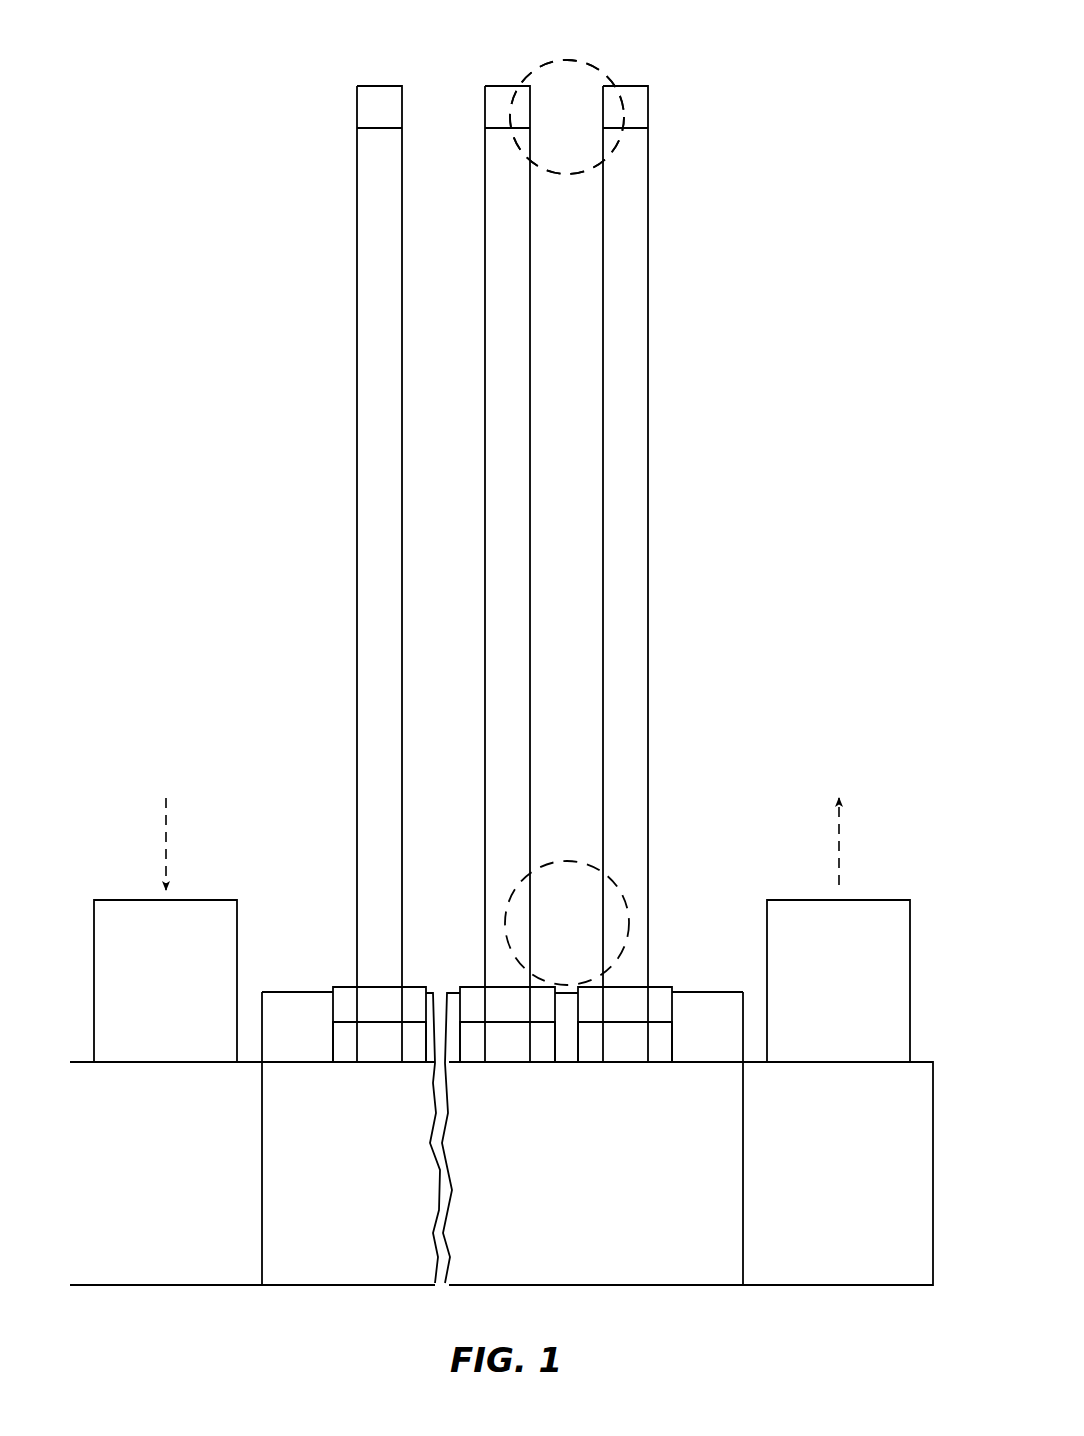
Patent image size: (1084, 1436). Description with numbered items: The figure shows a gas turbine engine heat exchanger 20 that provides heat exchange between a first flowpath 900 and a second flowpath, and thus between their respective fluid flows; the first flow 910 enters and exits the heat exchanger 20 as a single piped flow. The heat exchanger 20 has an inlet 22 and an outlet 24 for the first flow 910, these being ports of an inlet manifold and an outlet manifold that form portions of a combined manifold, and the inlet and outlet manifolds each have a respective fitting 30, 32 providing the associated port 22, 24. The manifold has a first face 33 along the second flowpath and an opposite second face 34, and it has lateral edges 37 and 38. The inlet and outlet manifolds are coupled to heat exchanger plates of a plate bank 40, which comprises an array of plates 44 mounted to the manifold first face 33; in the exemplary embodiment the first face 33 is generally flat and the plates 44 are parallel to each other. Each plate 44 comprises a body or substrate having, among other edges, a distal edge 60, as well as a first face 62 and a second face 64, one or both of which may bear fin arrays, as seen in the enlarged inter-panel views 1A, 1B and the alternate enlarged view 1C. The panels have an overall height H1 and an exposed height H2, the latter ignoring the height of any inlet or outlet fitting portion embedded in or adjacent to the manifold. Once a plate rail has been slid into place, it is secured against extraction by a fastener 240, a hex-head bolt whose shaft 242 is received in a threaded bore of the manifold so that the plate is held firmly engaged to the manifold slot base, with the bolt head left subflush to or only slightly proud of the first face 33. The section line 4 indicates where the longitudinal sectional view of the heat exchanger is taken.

The gas turbine engine heat exchanger 20 is at (217, 235).
The inlet 22 is at (185, 885).
The outlet 24 is at (818, 890).
The fitting 30 is at (143, 917).
The fitting 32 is at (787, 910).
The first face 33 is at (717, 992).
The second face 34 is at (645, 1285).
The lateral edge 37 is at (261, 1235).
The lateral edge 38 is at (745, 1235).
The plate bank 40 is at (543, 531).
The plate 44 is at (670, 185).
The distal edge 60 is at (357, 50).
The first face 62 is at (485, 352).
The second face 64 is at (530, 377).
The fastener 240 is at (634, 998).
The shaft 242 is at (631, 1043).
The first flowpath 900 is at (166, 818).
The first flow 910 is at (166, 862).
The overall height H1 is at (347, 86).
The exposed height H2 is at (316, 87).
The enlarged view of inter-panel space 1A is at (567, 175).
The enlarged view of inter-panel space 1B is at (583, 862).
The alternate enlarged view of inter-panel space 1C is at (567, 117).
The section line 4- 4 is at (510, 86).